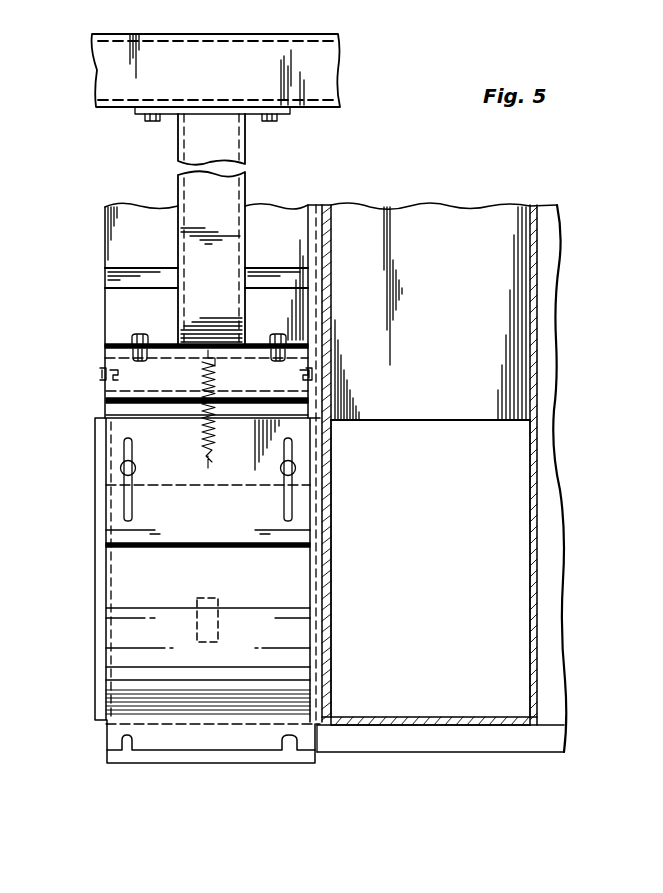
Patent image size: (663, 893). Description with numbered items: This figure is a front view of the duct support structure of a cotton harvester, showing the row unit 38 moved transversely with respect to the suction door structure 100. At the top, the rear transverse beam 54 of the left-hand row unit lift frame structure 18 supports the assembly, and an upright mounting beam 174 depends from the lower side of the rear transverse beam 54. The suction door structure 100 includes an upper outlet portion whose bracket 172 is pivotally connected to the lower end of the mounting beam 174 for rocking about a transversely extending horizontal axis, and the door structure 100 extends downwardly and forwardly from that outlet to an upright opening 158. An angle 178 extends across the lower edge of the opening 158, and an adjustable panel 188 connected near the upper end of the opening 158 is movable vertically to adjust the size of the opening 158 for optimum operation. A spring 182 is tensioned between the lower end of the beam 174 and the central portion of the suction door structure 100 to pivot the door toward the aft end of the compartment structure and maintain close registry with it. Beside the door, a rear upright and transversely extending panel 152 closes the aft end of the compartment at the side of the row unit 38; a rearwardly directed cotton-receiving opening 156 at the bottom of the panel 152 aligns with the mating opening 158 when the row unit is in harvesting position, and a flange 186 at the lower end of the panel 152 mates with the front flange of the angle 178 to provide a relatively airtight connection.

The left-hand row unit lift frame structure 18 is at (357, 71).
The rear transverse beam 54 is at (107, 68).
The upright mounting beam 174 is at (178, 176).
The row unit 38 is at (436, 198).
The rear upright panel 152 is at (482, 222).
The cotton-receiving opening 156 is at (500, 497).
The flange 186 is at (500, 777).
The bracket 172 is at (90, 377).
The spring 182 is at (218, 440).
The suction door structure 100 is at (86, 469).
The adjustable panel 188 is at (148, 528).
The upright opening 158 is at (143, 573).
The angle 178 is at (107, 745).